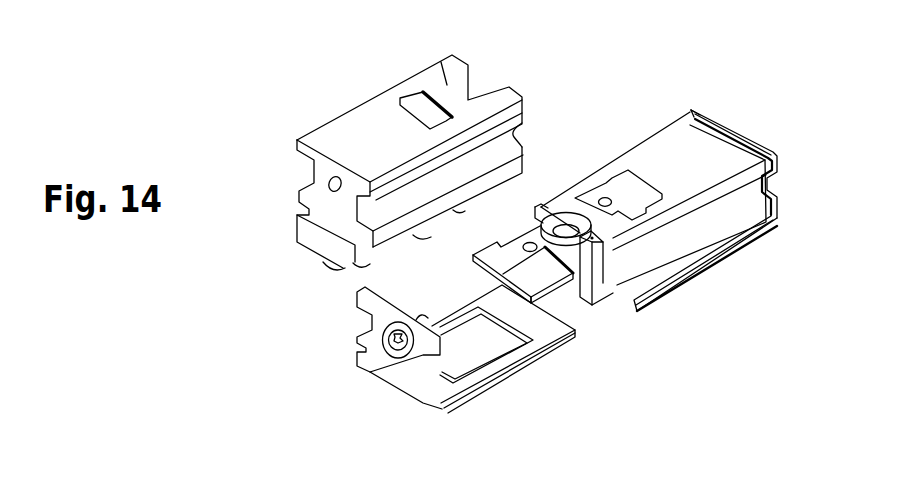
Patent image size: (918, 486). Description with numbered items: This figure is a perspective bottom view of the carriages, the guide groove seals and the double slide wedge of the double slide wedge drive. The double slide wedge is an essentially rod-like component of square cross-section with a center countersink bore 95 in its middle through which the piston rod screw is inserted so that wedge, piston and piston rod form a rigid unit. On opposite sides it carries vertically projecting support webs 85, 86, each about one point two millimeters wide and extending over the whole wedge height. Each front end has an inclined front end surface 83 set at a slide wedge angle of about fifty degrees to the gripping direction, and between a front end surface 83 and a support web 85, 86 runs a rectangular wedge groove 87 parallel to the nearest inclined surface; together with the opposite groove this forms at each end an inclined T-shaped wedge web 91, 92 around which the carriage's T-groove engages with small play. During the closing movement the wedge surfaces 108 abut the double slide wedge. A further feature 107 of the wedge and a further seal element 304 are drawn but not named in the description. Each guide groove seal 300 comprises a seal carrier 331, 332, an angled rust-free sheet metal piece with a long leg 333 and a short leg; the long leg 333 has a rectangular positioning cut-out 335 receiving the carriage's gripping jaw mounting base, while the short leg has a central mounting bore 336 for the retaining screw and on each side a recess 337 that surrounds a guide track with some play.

The slot 107 is at (477, 100).
The wedge surfaces 108 is at (311, 106).
The inclined front end surface 83 is at (360, 264).
The wedge groove 87 is at (614, 306).
The wedge web 91 is at (498, 238).
The support web 85 is at (609, 104).
The center countersink bore 95 is at (635, 123).
The support web 86 is at (658, 173).
The wedge web 92 is at (756, 57).
The spring clip 304 is at (736, 237).
The seal carrier 332 is at (744, 257).
The guide groove seal 300 is at (419, 383).
The recess 337 is at (303, 348).
The mounting bore 336 is at (289, 342).
The seal carrier 331 is at (533, 372).
The long leg 333 is at (523, 394).
The rectangular positioning cut-out 335 is at (489, 397).